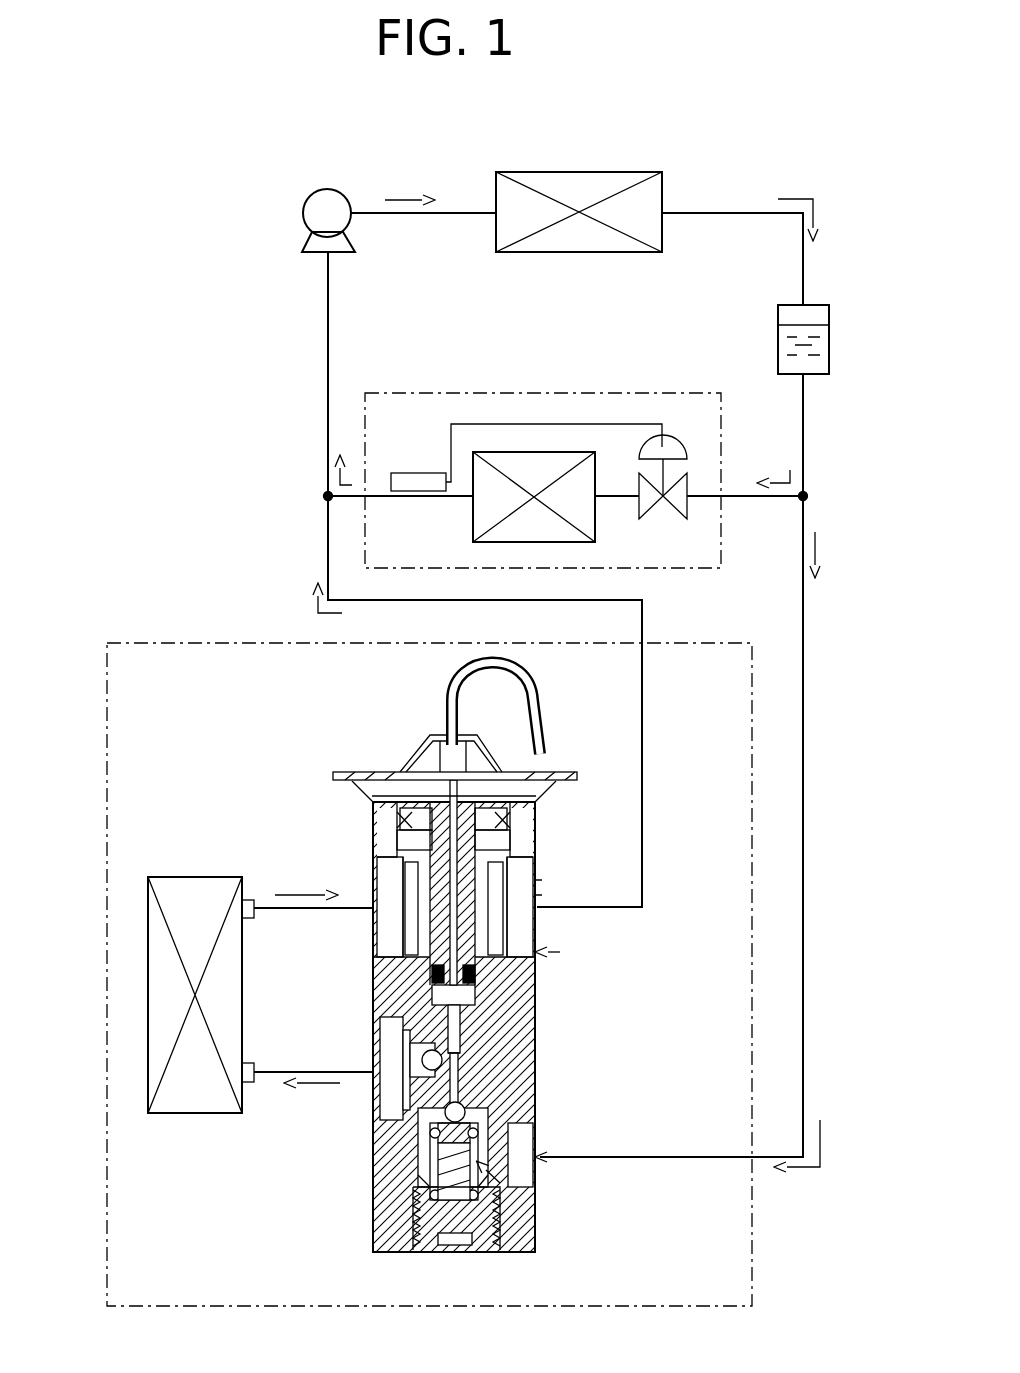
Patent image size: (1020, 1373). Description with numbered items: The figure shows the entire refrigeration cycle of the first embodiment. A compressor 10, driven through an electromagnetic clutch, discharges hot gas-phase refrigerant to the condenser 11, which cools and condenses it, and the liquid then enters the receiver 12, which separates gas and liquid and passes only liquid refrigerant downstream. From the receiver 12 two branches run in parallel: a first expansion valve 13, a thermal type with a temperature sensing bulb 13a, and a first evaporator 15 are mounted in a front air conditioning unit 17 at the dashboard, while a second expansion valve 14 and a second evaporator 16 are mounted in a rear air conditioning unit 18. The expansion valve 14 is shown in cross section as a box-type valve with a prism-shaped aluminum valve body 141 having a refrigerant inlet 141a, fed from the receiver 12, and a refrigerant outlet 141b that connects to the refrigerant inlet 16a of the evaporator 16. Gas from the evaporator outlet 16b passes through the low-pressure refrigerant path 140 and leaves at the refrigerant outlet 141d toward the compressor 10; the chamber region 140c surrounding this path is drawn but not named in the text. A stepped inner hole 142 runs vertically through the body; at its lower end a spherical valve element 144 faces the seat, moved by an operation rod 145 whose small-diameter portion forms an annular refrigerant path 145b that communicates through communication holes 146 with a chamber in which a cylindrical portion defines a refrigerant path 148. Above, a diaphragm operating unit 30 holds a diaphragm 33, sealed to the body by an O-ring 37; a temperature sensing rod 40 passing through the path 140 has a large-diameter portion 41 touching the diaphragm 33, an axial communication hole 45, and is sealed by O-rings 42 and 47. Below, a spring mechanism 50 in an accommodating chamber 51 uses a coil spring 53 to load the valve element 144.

The compressor 10 is at (300, 213).
The condenser 11 is at (580, 172).
The receiver 12 is at (790, 305).
The first expansion valve 13 is at (675, 447).
The temperature sensing bulb 13a is at (410, 473).
The second expansion valve 14 is at (463, 979).
The first evaporator 15 is at (540, 452).
The second evaporator 16 is at (183, 1113).
The refrigerant inlet of evaporator 16a is at (246, 1082).
The outlet of evaporator 16b is at (248, 900).
The front air conditioning unit 17 is at (378, 393).
The rear air conditioning unit 18 is at (192, 643).
The diaphragm operating unit 30 is at (398, 738).
The diaphragm 33 is at (437, 760).
The O-ring 37 is at (540, 808).
The temperature sensing rod 40 is at (540, 858).
The large-diameter portion 41 is at (418, 795).
The O-ring 42 is at (535, 845).
The communication hole 45 is at (455, 795).
The O-ring 47 is at (536, 975).
The spring mechanism 50 is at (536, 1200).
The accommodating chamber 51 is at (432, 1188).
The coil spring 53 is at (453, 1250).
The low-pressure refrigerant path 140 is at (392, 880).
The chamber 140c is at (385, 940).
The valve body 141 is at (536, 1035).
The refrigerant inlet 141a is at (536, 1170).
The refrigerant outlet 141b is at (385, 1108).
The refrigerant outlet 141d is at (538, 888).
The stepped inner hole 142 is at (536, 998).
The spherical valve element 144 is at (395, 1140).
The operation rod 145 is at (448, 1018).
The annular refrigerant path 145b is at (536, 1078).
The communication hole 146 is at (536, 1112).
The refrigerant path 148 is at (422, 1058).